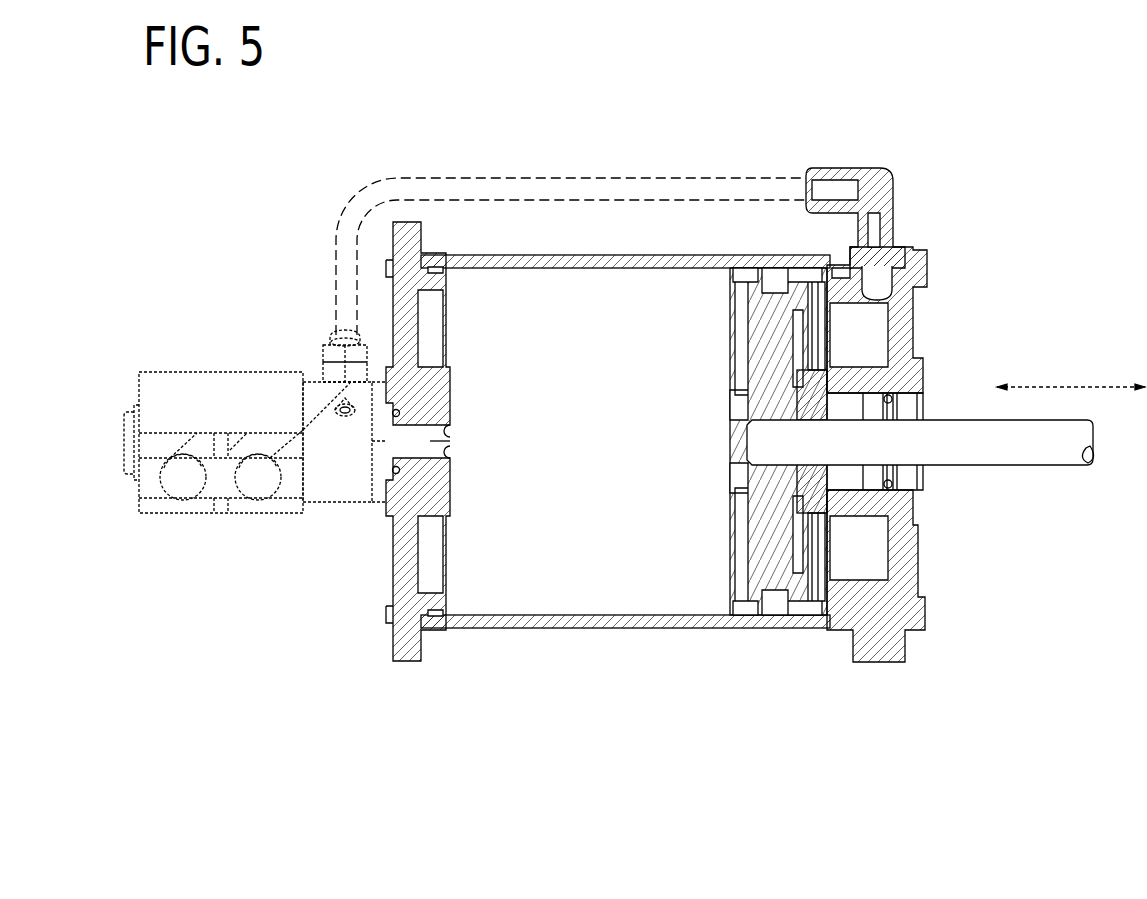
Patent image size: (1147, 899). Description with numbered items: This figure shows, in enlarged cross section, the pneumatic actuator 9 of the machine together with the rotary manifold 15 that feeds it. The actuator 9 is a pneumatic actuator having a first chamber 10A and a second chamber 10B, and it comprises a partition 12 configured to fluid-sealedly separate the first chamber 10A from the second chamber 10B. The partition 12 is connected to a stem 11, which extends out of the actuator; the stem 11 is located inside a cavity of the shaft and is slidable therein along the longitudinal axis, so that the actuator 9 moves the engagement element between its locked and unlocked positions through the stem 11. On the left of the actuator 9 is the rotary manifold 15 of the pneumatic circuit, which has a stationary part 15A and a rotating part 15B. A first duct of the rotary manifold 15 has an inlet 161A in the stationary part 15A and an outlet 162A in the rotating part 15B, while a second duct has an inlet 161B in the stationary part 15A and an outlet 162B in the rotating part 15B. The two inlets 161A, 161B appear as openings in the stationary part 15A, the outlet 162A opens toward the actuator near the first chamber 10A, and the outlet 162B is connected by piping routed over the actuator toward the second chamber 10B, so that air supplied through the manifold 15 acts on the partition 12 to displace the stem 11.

The actuator 9 is at (676, 650).
The first chamber 10A is at (580, 590).
The second chamber 10B is at (857, 337).
The stem 11 is at (1035, 450).
The partition 12 is at (778, 592).
The rotary manifold 15 is at (217, 468).
The stationary part 15A is at (175, 468).
The rotating part 15B is at (353, 467).
The inlet 161A is at (185, 482).
The inlet 161B is at (268, 483).
The outlet 162A is at (450, 441).
The outlet 162B is at (340, 340).